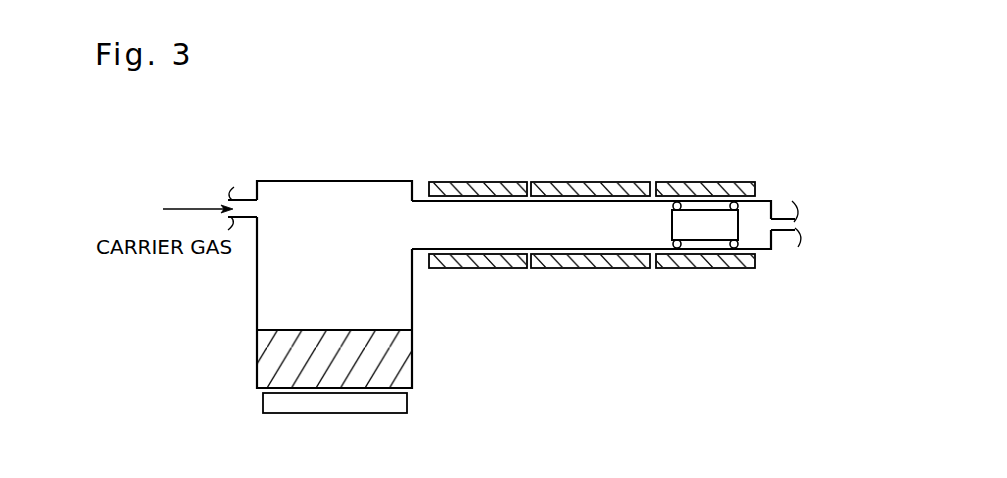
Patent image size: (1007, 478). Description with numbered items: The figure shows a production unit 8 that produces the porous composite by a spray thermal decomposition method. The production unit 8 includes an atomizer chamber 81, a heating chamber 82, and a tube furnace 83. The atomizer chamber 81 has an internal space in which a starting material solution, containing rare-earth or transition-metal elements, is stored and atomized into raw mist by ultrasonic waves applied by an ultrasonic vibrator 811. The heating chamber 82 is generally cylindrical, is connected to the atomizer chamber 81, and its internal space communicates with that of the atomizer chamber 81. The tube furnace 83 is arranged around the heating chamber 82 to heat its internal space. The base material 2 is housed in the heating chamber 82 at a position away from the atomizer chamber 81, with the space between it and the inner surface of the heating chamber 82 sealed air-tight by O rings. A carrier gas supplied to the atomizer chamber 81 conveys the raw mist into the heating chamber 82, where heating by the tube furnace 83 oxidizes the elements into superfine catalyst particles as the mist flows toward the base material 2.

The production unit 8 is at (238, 156).
The atomizer chamber 81 is at (373, 303).
The ultrasonic vibrator 811 is at (407, 403).
The heating chamber 82 is at (592, 227).
The tube furnace 83 is at (608, 183).
The base material 2 is at (706, 233).